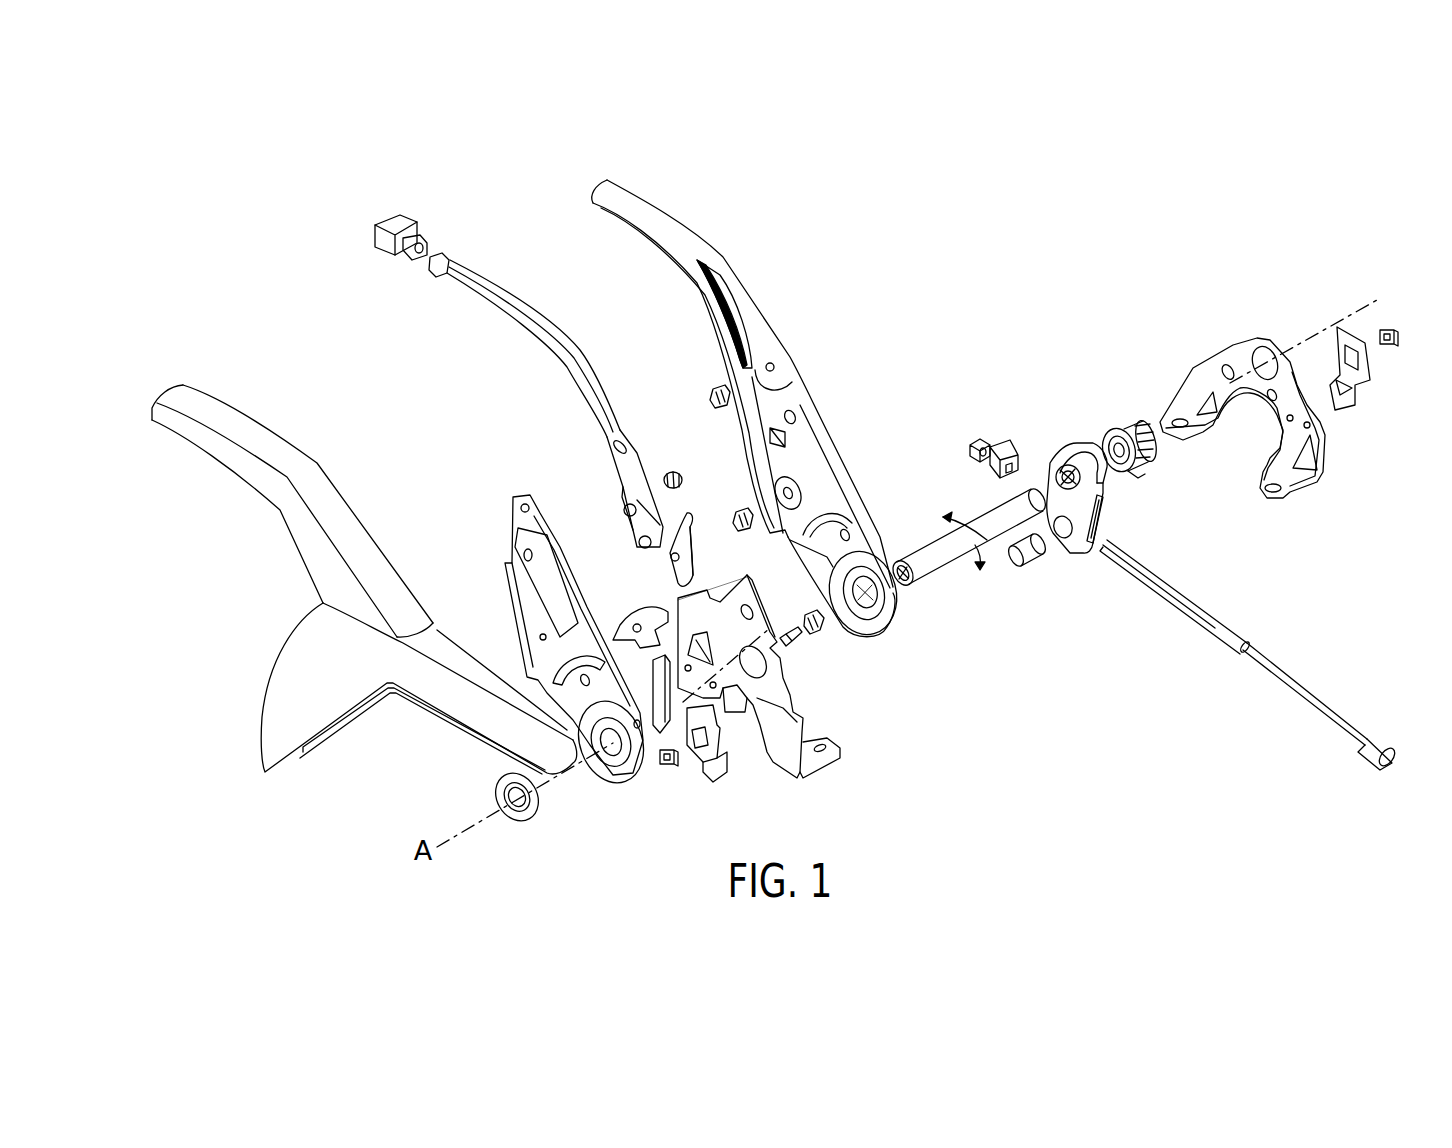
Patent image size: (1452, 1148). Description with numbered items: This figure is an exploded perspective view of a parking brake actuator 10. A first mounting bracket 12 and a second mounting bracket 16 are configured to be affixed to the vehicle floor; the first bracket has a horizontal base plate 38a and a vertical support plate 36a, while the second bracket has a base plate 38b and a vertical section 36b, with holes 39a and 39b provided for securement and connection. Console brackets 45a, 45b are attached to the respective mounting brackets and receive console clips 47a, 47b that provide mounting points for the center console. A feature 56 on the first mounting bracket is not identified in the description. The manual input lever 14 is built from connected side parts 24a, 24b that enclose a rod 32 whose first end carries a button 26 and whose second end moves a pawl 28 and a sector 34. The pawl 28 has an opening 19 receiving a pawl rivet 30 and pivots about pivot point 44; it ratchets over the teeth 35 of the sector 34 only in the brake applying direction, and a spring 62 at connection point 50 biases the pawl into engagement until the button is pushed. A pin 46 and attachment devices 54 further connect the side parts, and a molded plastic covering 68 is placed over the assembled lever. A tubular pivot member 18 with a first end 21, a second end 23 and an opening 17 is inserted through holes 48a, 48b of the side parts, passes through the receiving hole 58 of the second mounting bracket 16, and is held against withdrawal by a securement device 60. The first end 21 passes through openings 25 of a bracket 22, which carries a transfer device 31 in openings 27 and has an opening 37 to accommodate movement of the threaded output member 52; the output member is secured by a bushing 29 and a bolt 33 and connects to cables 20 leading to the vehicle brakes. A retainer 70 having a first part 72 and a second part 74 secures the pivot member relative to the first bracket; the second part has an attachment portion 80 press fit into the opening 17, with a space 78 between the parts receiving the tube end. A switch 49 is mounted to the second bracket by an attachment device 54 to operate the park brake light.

The brake actuator 10 is at (1005, 166).
The first mounting bracket 12 is at (1268, 338).
The manual input lever 14 is at (497, 248).
The second mounting bracket 16 is at (812, 713).
The opening 17 is at (905, 587).
The pivot member 18 is at (950, 577).
The opening 19 is at (672, 559).
The cables 20 is at (1377, 742).
The first end 21 is at (1024, 497).
The bracket 22 is at (1090, 556).
The second end 23 is at (895, 552).
The first side part 24a is at (665, 217).
The second side part 24b is at (515, 500).
The openings 25 is at (1063, 472).
The button 26 is at (395, 222).
The additional openings 27 is at (1065, 538).
The pawl 28 is at (693, 537).
The bushing 29 is at (1002, 445).
The pawl pivot pin 30 is at (738, 512).
The transfer device 31 is at (1020, 562).
The rod 32 is at (556, 320).
The bolt 33 is at (977, 440).
The sector 34 is at (606, 666).
The gear teeth 35 is at (645, 608).
The vertical section 36a is at (1322, 412).
The vertical section 36b is at (752, 598).
The opening 37 is at (1102, 516).
The horizontal base plate 38a is at (1188, 400).
The horizontal base plate 38b is at (820, 760).
The holes 39a is at (1178, 418).
The holes 39b is at (830, 748).
The pivot point 44 is at (795, 490).
The console bracket 45a is at (1368, 386).
The console bracket 45b is at (718, 782).
The pin 46 is at (714, 390).
The console clip 47a is at (1390, 326).
The console clip 47b is at (670, 770).
The hole 48a is at (866, 600).
The hole 48b is at (616, 770).
The switch 49 is at (653, 735).
The connection point 50 is at (784, 437).
The output member 52 is at (1200, 620).
The attachment device 54 is at (785, 632).
The opening 56 is at (1256, 358).
The receiving hole 58 is at (766, 666).
The securement device 60 is at (524, 820).
The spring 62 is at (669, 474).
The molded plastic covering 68 is at (246, 411).
The retainer 70 is at (1127, 416).
The first part 72 is at (1138, 482).
The second part 74 is at (1152, 452).
The space 78 is at (1110, 440).
The attachment portion 80 is at (1118, 485).